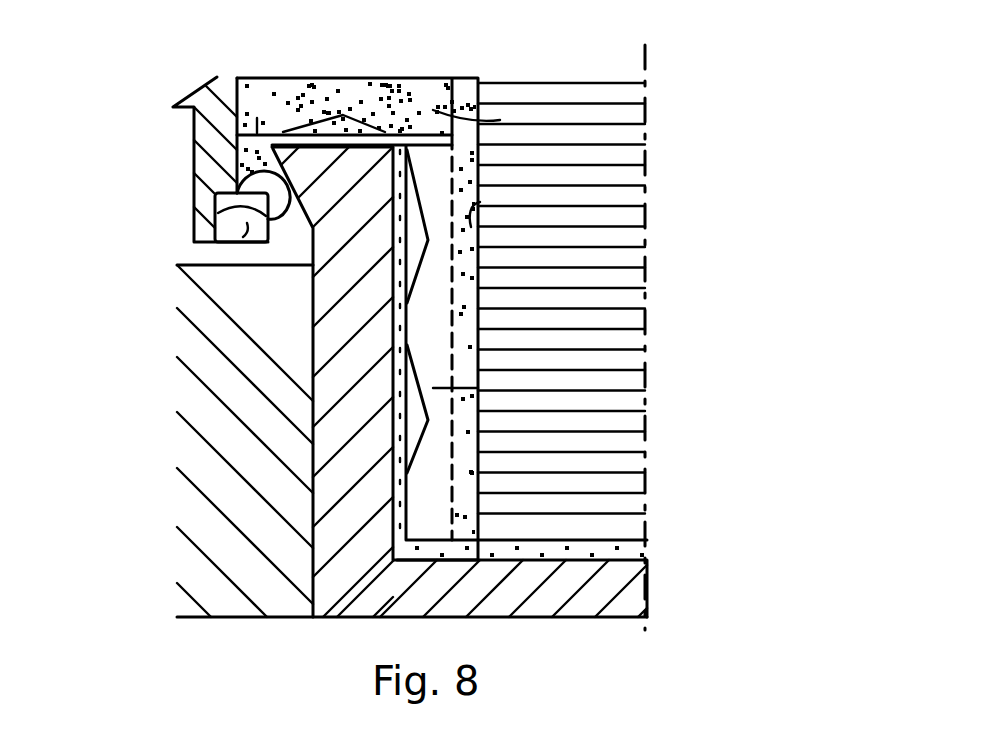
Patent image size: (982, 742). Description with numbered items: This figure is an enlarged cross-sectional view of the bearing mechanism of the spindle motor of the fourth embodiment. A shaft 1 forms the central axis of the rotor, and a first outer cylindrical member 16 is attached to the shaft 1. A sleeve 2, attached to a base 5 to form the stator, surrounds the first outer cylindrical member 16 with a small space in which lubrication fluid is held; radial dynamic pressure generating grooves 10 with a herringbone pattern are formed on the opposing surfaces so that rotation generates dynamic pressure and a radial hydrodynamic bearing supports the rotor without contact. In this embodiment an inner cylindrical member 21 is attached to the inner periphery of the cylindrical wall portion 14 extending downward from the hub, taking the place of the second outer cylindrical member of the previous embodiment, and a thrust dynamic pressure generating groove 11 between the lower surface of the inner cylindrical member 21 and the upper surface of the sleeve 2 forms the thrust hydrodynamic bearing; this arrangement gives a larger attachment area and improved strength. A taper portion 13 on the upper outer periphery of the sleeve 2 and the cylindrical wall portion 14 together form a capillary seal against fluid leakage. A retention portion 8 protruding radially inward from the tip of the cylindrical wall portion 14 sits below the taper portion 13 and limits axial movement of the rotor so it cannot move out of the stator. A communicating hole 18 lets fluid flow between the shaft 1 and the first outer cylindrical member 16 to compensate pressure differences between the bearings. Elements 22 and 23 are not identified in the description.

The shaft 1 is at (610, 470).
The sleeve 2 is at (342, 452).
The base 5 is at (228, 552).
The retention portion 8 is at (230, 245).
The radial dynamic pressure generating grooves 10 is at (428, 240).
The thrust dynamic pressure generating groove 11 is at (317, 84).
The taper portion 13 is at (215, 222).
The cylindrical wall portion 14 is at (210, 150).
The first outer cylindrical member 16 is at (478, 388).
The communicating hole 18 is at (480, 202).
The inner cylindrical member 21 is at (480, 147).
The seal body 22 is at (475, 77).
The top surface of seal body 23 is at (500, 120).